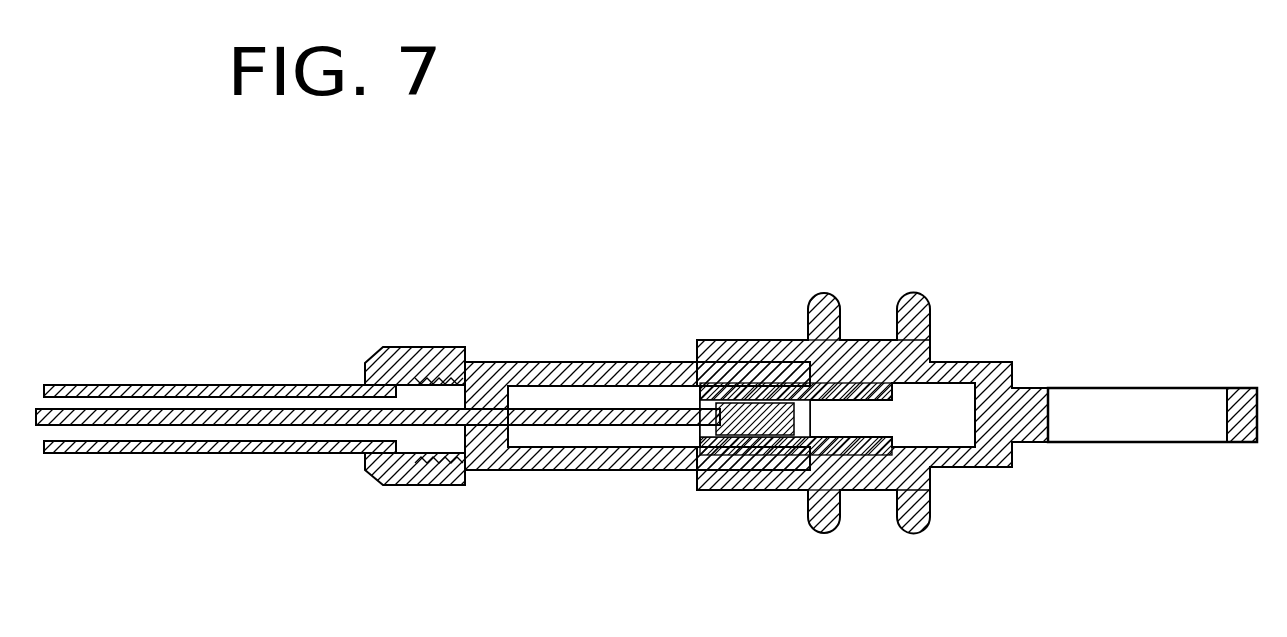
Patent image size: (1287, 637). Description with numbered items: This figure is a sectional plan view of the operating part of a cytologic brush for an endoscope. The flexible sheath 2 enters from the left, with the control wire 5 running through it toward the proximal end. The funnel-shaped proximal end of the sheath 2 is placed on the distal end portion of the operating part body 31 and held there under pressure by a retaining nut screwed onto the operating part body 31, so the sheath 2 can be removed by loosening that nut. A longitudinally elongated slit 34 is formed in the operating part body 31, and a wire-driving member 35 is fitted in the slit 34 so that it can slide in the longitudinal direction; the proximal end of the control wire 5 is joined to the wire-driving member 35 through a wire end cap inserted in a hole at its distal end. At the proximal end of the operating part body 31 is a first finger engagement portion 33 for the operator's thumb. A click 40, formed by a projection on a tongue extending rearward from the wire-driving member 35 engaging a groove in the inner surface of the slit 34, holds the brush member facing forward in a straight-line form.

The sheath 2 is at (200, 385).
The control wire 5 is at (263, 427).
The operating part body 31 is at (958, 358).
The first finger engagement portion 33 is at (1148, 444).
The slit 34 is at (947, 462).
The wire-driving member 35 is at (806, 437).
The click 40 is at (878, 382).